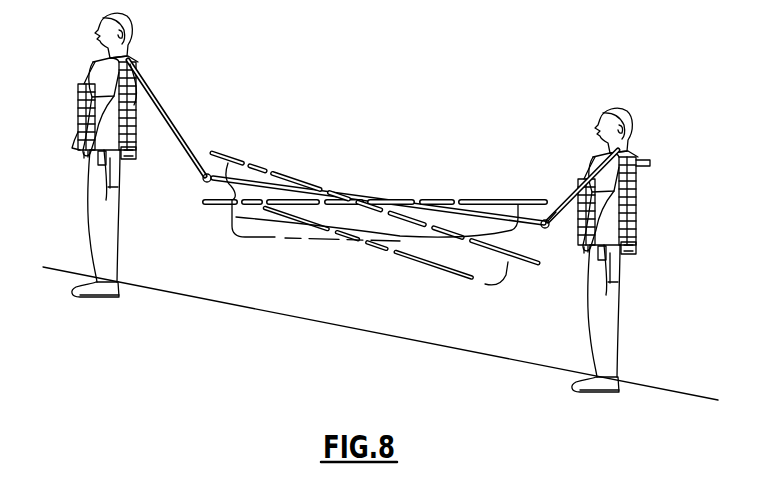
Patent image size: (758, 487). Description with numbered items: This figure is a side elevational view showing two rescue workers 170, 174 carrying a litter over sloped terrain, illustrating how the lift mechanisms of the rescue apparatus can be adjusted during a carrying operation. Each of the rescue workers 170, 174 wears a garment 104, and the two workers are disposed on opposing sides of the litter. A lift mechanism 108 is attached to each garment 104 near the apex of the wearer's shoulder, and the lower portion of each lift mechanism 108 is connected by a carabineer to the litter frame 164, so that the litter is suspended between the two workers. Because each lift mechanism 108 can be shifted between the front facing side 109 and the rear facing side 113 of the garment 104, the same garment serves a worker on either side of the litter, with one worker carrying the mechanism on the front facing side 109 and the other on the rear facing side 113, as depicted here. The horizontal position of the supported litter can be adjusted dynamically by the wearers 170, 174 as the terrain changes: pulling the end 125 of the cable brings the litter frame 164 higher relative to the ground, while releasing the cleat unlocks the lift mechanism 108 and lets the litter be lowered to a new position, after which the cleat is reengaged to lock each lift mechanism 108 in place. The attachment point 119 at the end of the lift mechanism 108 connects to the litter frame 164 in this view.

The rescue worker 170 is at (66, 58).
The rescue worker 174 is at (571, 137).
The garment 104 is at (78, 106).
The lift mechanism 108 is at (170, 118).
The front facing side 109 is at (73, 140).
The rear facing side 113 is at (137, 160).
The ring 119 is at (570, 232).
The end of the cable 125 is at (122, 198).
The litter frame 164 is at (445, 268).